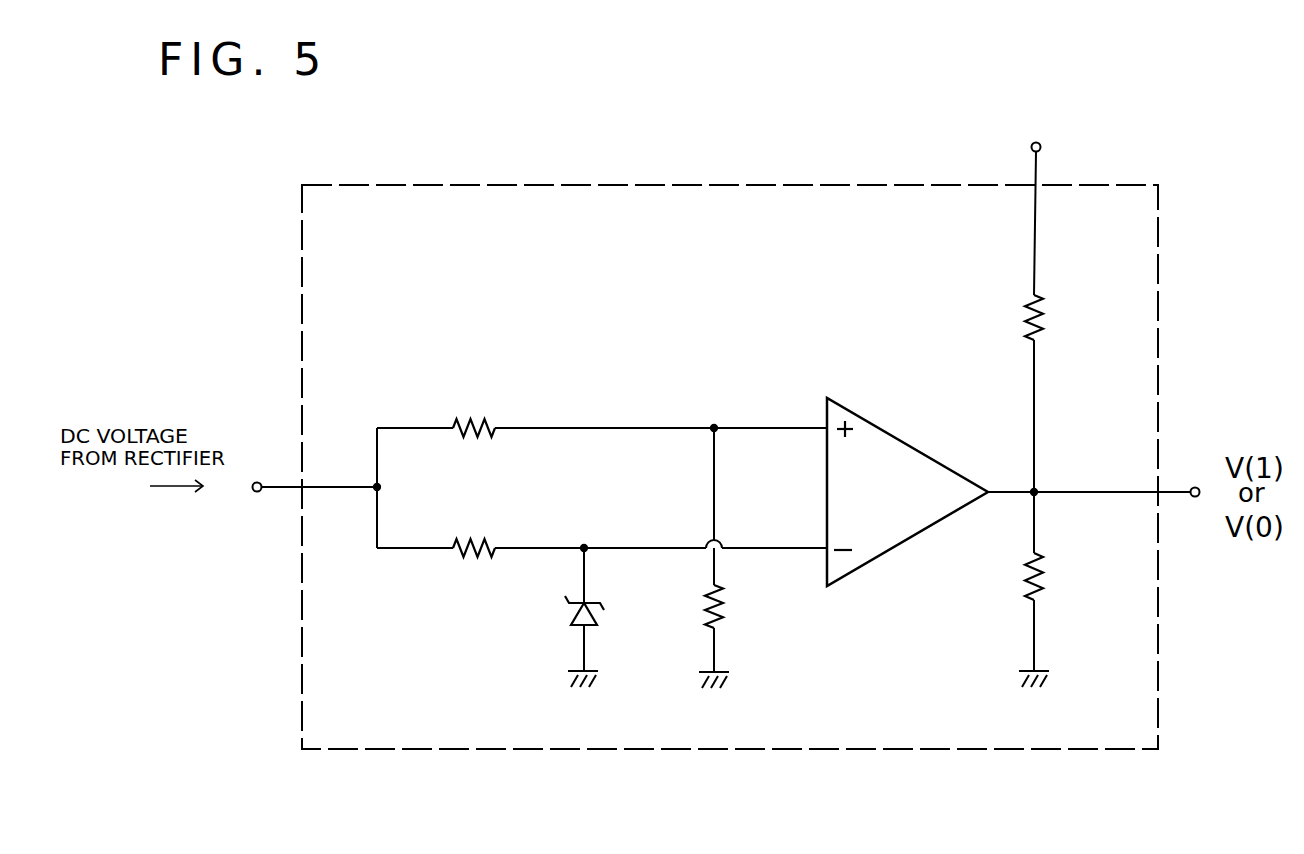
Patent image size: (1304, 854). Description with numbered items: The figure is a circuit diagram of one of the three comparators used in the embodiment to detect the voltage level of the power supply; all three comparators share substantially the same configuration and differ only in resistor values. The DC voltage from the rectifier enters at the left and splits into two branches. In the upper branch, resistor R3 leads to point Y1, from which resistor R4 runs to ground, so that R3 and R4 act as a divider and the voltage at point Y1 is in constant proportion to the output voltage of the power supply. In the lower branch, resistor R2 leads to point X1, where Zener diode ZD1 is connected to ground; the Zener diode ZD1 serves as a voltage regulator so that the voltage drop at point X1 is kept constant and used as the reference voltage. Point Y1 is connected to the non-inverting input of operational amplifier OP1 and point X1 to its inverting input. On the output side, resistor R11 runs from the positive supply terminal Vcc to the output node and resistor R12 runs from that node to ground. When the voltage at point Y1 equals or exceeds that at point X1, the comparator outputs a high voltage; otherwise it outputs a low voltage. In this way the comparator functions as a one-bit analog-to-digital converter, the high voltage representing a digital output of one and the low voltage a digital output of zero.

The resistor R2 is at (474, 527).
The resistor R3 is at (474, 407).
The resistor R4 is at (737, 606).
The resistor R11 is at (1067, 317).
The resistor R12 is at (1066, 576).
The operational amplifier OP1 is at (907, 469).
The Zener diode ZD1 is at (557, 617).
The point x1 X1 is at (586, 543).
The point y1 Y1 is at (710, 424).
The supply voltage terminal Vcc is at (1061, 204).